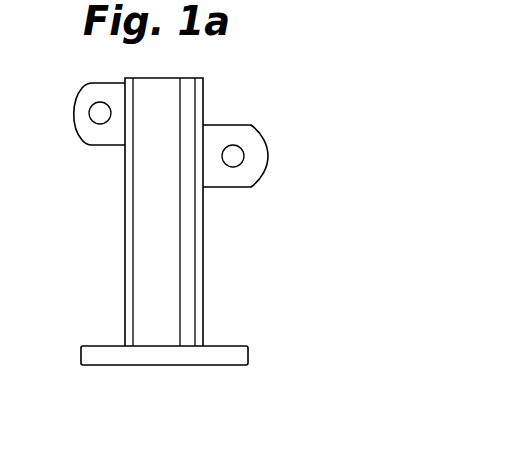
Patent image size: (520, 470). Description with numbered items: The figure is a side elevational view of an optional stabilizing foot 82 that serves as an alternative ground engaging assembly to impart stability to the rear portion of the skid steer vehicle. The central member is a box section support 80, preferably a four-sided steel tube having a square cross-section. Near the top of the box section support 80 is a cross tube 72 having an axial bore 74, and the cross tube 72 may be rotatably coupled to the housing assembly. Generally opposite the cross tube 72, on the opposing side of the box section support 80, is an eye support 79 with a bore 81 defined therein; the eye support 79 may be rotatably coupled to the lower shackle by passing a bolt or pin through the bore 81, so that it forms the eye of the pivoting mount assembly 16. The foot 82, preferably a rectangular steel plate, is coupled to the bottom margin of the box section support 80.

The pivoting mount assembly 16 is at (212, 68).
The cross tube 72 is at (97, 138).
The axial bore 74 is at (97, 120).
The eye support 79 is at (232, 125).
The box section support 80 is at (125, 248).
The bore 81 is at (235, 160).
The stabilizing foot 82 is at (92, 352).